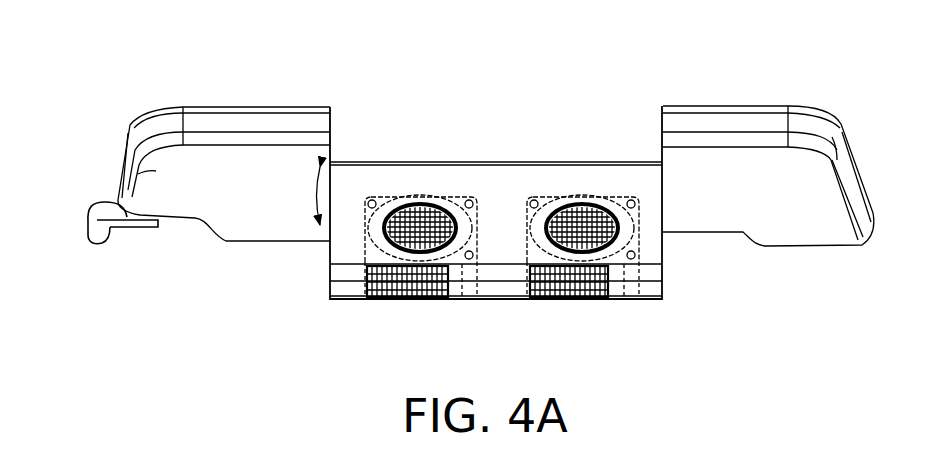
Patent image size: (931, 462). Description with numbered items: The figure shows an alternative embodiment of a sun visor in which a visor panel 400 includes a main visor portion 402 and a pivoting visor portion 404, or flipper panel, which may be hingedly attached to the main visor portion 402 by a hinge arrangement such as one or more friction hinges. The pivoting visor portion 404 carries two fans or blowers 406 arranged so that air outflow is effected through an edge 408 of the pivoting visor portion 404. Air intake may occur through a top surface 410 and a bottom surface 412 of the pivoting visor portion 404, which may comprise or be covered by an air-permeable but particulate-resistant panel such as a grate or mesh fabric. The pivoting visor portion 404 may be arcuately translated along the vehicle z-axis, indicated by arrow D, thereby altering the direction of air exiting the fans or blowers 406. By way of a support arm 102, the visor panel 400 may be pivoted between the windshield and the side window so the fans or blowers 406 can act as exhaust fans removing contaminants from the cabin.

The visor panel 400 is at (370, 85).
The support arm 102 is at (140, 225).
The main visor portion 402 is at (120, 163).
The pivoting visor portion 404 is at (684, 278).
The fans or blowers 406 is at (422, 215).
The edge 408 is at (650, 290).
The top surface 410 is at (497, 162).
The bottom surface 412 is at (505, 292).